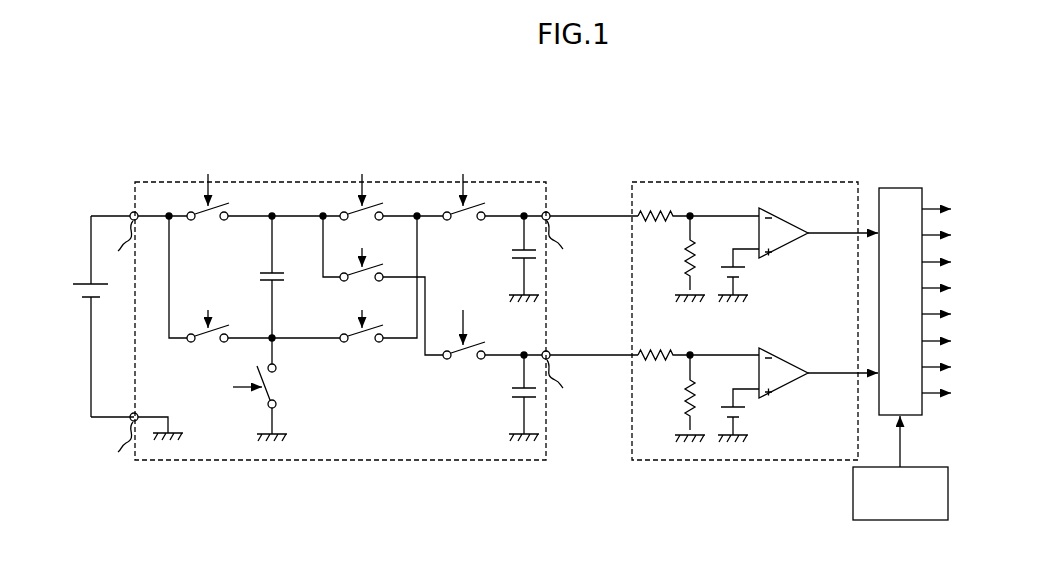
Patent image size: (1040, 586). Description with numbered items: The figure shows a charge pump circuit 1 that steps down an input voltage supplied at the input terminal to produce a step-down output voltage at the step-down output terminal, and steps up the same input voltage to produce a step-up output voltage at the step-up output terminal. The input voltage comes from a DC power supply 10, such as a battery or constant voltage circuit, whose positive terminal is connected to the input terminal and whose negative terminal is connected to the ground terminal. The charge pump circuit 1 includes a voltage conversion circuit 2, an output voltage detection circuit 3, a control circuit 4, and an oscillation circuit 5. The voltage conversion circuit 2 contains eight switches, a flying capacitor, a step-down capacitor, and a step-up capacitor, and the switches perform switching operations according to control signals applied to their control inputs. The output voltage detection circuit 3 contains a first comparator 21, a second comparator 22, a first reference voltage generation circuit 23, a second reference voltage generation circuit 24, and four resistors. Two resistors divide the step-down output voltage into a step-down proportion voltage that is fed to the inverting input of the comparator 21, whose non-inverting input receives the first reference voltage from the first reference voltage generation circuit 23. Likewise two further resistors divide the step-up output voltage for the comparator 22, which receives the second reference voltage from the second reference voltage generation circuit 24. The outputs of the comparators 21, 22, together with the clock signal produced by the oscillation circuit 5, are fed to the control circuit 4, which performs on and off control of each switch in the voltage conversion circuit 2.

The charge pump circuit 1 is at (690, 115).
The voltage conversion circuit 2 is at (528, 178).
The output voltage detection circuit 3 is at (798, 178).
The control circuit 4 is at (900, 188).
The oscillation circuit 5 is at (948, 493).
The DC power supply 10 is at (73, 302).
The comparator 21 is at (785, 214).
The comparator 22 is at (785, 351).
The first reference voltage generation circuit 23 is at (746, 272).
The second reference voltage generation circuit 24 is at (746, 412).